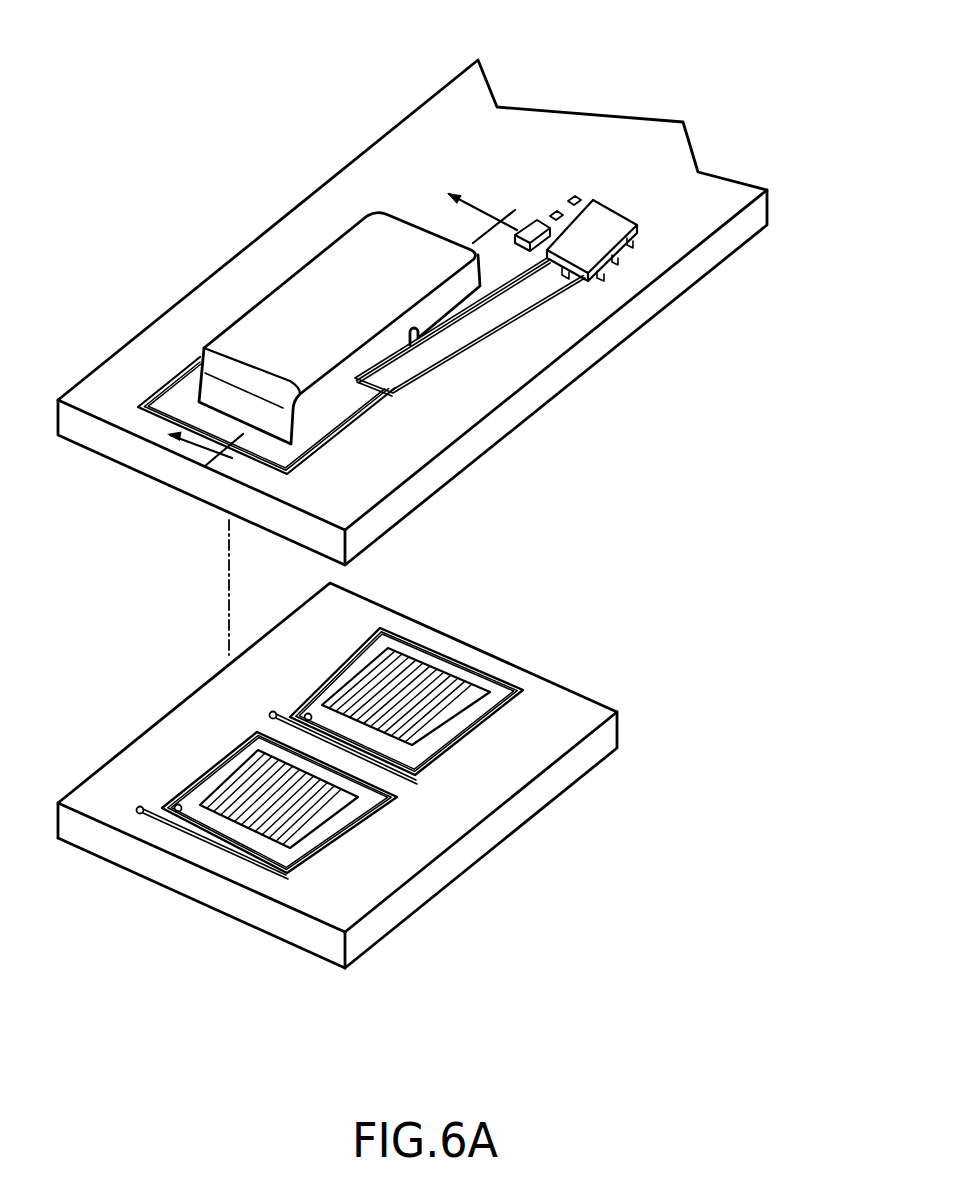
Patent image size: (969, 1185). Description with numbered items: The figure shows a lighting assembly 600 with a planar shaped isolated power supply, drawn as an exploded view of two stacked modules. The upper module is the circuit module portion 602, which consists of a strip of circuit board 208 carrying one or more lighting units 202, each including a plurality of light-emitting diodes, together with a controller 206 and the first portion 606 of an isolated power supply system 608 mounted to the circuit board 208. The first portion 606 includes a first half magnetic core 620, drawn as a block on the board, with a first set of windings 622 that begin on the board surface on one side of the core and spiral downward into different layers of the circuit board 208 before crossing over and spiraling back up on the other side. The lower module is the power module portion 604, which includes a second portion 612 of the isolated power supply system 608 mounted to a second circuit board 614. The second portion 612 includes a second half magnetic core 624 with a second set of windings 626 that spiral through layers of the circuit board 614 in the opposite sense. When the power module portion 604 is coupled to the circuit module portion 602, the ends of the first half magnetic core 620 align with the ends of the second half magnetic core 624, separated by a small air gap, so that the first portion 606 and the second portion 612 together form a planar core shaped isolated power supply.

The lighting assembly 600 is at (182, 124).
The circuit module portion 602 is at (196, 268).
The power module portion 604 is at (528, 643).
The first portion of isolated power supply system 606 is at (290, 253).
The isolated power supply system 608 is at (194, 847).
The second portion of isolated power supply system 612 is at (223, 937).
The circuit board 614 is at (298, 942).
The first half magnetic core 620 is at (253, 358).
The first set of windings 622 is at (163, 420).
The second half magnetic core 624 is at (235, 787).
The second set of windings 626 is at (160, 806).
The lighting unit 202 is at (552, 223).
The controller 206 is at (612, 232).
The circuit board 208 is at (360, 177).